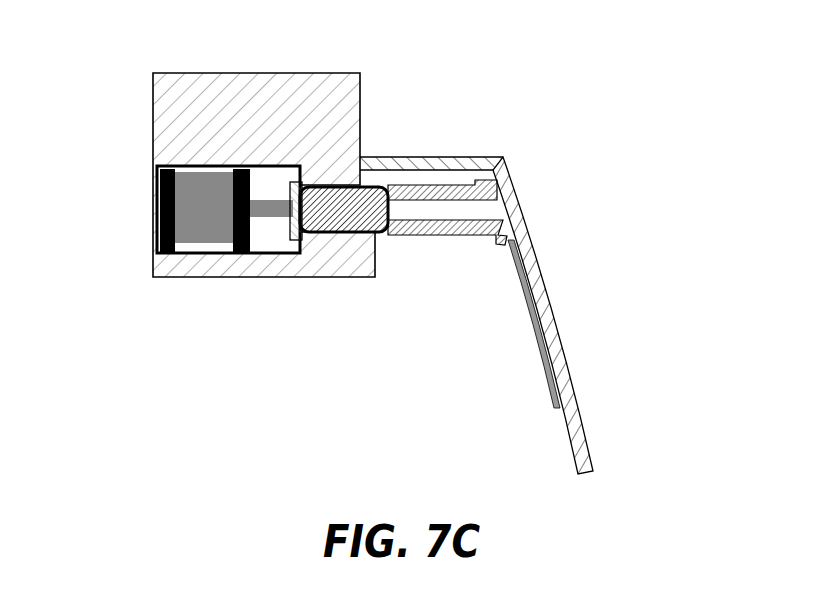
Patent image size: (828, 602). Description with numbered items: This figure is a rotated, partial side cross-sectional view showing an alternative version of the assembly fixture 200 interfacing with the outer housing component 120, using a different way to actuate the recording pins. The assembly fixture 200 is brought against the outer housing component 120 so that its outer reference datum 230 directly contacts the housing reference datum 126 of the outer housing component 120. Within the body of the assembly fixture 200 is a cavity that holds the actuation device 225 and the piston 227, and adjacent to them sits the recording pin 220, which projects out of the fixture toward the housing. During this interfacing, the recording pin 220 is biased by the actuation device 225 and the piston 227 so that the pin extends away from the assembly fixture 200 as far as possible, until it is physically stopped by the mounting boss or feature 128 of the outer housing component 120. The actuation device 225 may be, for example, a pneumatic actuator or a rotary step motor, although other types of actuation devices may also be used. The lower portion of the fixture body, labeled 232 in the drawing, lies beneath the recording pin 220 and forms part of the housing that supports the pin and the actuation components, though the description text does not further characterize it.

The assembly fixture 200 is at (163, 110).
The outer reference datum 230 is at (372, 92).
The housing base portion 232 is at (388, 273).
The actuation device 225 is at (217, 207).
The piston 227 is at (268, 196).
The recording pin 220 is at (328, 214).
The housing reference datum 126 is at (340, 164).
The mounting boss or feature 128 is at (488, 222).
The outer housing component 120 is at (562, 390).